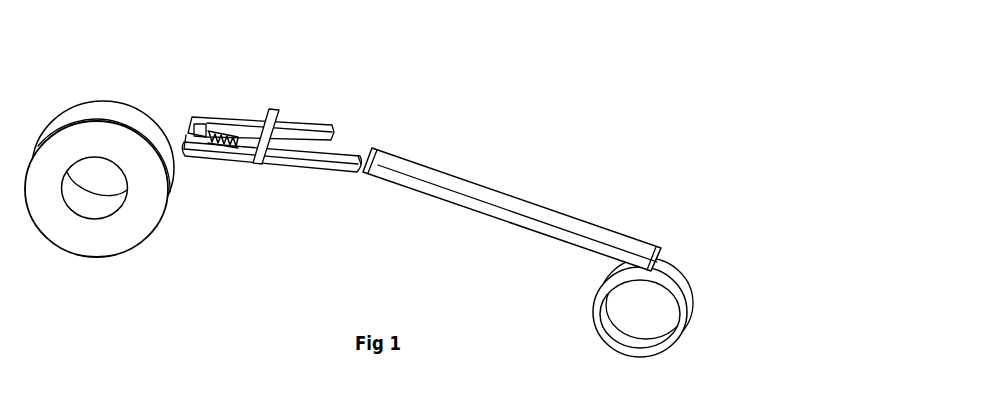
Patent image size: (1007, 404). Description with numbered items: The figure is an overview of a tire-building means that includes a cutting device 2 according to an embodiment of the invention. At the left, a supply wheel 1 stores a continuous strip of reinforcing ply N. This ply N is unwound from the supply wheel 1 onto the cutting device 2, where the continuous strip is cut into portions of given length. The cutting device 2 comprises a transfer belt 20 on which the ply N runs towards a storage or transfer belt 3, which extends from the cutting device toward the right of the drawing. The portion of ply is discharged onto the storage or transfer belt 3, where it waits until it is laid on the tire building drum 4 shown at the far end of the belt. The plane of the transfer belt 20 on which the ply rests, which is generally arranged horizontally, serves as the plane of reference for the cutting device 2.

The supply wheel 1 is at (110, 132).
The cutting device 2 is at (258, 104).
The transfer belt 20 is at (325, 168).
The storage or transfer belt 3 is at (503, 198).
The tire building drum 4 is at (667, 268).
The continuous strip of reinforcing ply N is at (186, 135).